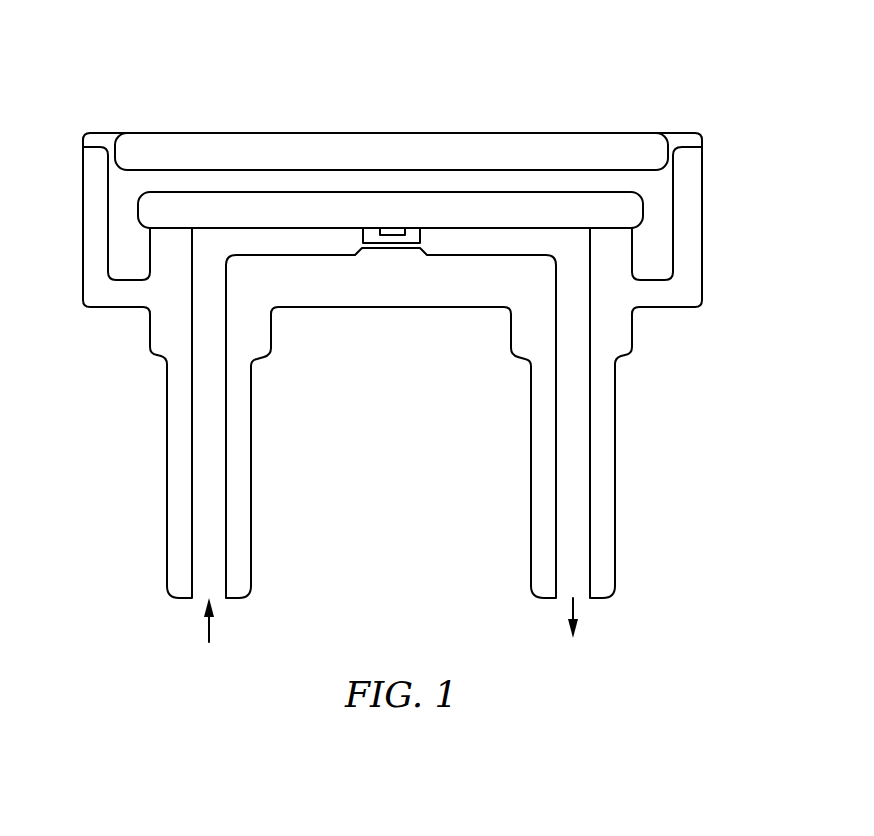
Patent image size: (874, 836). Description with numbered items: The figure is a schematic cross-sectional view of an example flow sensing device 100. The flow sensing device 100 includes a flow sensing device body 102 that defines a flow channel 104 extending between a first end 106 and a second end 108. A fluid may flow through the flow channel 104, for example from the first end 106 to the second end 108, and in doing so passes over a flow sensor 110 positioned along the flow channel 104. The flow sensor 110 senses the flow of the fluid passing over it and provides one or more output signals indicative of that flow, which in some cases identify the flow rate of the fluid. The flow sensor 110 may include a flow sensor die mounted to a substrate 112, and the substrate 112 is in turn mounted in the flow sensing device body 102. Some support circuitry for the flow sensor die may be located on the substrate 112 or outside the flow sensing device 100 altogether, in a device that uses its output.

The flow sensing device 100 is at (110, 18).
The flow sensing device body 102 is at (166, 337).
The flow channel 104 is at (201, 505).
The first end 106 is at (210, 631).
The second end 108 is at (575, 631).
The flow sensor 110 is at (400, 231).
The substrate 112 is at (643, 209).